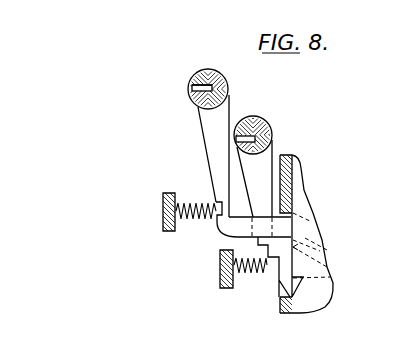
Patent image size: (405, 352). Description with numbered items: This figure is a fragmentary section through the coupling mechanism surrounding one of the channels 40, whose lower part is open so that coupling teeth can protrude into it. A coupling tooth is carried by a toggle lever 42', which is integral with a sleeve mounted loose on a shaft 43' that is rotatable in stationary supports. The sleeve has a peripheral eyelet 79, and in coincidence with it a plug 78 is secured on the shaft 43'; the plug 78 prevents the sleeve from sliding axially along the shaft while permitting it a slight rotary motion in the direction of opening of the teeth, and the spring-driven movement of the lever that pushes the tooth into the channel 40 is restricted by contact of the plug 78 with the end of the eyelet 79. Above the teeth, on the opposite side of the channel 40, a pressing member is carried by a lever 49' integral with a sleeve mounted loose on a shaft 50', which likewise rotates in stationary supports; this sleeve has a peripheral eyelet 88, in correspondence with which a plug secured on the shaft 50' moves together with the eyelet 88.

The channel 40 is at (305, 223).
The toggle lever 42' is at (225, 247).
The shaft 43' is at (274, 122).
The lever 49' is at (161, 156).
The shaft 50' is at (208, 72).
The plug 78 is at (190, 92).
The peripheral eyelet 79 is at (233, 147).
The peripheral eyelet 88 is at (192, 83).